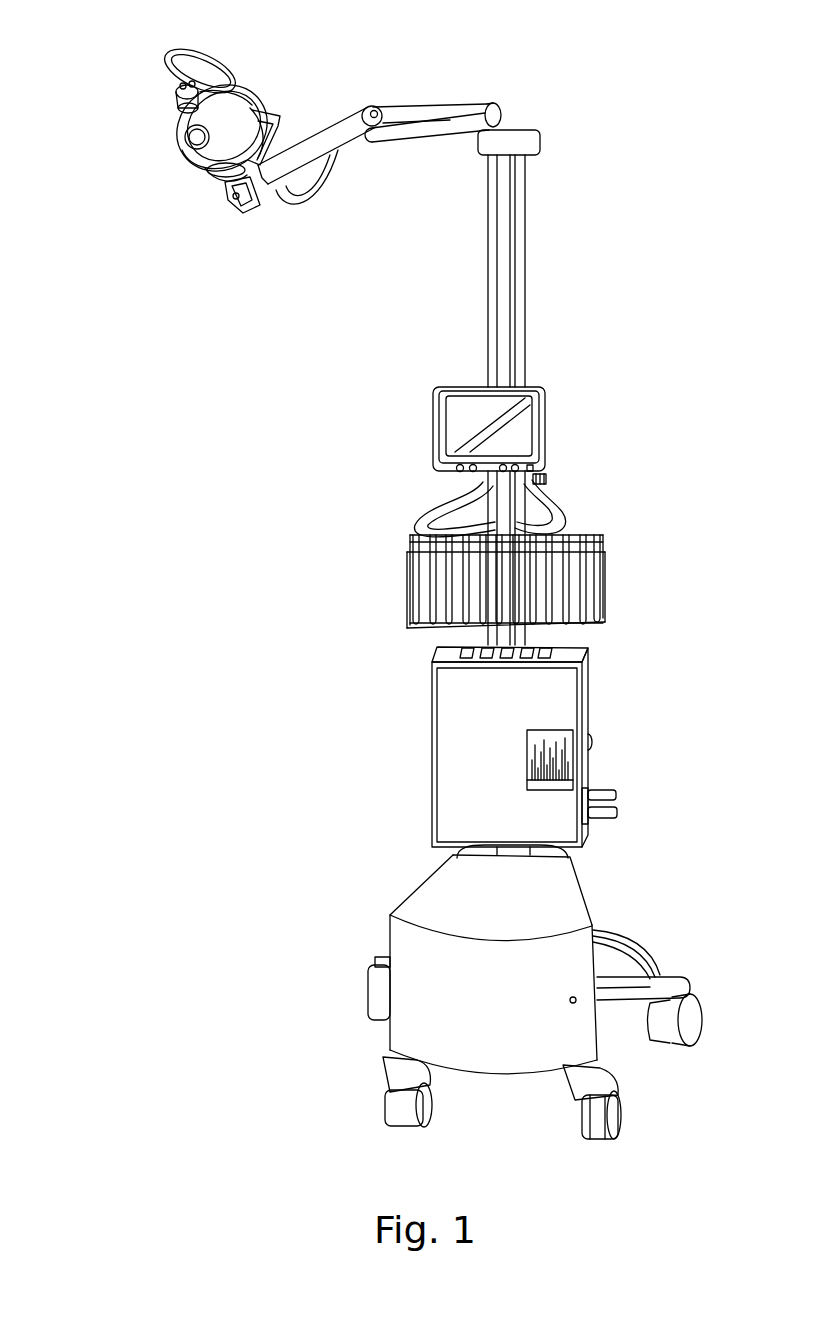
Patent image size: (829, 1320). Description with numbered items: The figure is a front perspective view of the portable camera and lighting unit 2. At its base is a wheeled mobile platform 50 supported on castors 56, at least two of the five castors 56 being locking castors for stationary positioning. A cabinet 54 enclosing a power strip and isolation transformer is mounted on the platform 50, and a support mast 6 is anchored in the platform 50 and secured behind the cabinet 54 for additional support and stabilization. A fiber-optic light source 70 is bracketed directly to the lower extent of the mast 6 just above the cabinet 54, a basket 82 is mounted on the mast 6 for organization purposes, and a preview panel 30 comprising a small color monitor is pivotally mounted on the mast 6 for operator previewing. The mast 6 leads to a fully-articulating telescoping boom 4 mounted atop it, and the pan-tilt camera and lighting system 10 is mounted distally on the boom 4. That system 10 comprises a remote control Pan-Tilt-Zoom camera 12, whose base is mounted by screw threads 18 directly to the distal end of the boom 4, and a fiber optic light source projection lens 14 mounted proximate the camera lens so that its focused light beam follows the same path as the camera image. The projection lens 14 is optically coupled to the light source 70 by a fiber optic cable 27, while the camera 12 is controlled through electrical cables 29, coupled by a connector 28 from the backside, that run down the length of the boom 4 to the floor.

The portable camera and lighting unit 2 is at (640, 106).
The Pan-Tilt-Zoom camera 12 is at (148, 143).
The fiber optic light source projection lens 14 is at (180, 132).
The fiber optic cable 27 is at (233, 78).
The connector 28 is at (190, 78).
The screw threads 18 is at (218, 182).
The pan-tilt camera and lighting system 10 is at (233, 247).
The cables 29 is at (293, 200).
The articulating boom 4 is at (408, 137).
The support mast 6 is at (525, 267).
The preview panel 30 is at (547, 425).
The basket 82 is at (607, 552).
The fiber-optic light source 70 is at (552, 698).
The mobile platform 50 is at (657, 960).
The cabinet 54 is at (583, 942).
The castors 56 is at (577, 1118).